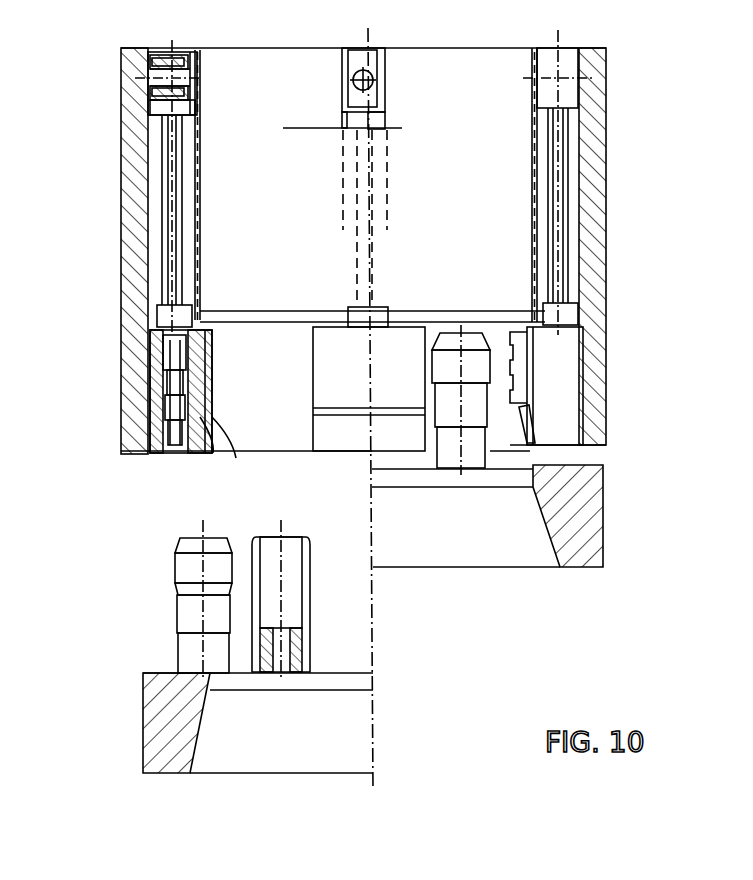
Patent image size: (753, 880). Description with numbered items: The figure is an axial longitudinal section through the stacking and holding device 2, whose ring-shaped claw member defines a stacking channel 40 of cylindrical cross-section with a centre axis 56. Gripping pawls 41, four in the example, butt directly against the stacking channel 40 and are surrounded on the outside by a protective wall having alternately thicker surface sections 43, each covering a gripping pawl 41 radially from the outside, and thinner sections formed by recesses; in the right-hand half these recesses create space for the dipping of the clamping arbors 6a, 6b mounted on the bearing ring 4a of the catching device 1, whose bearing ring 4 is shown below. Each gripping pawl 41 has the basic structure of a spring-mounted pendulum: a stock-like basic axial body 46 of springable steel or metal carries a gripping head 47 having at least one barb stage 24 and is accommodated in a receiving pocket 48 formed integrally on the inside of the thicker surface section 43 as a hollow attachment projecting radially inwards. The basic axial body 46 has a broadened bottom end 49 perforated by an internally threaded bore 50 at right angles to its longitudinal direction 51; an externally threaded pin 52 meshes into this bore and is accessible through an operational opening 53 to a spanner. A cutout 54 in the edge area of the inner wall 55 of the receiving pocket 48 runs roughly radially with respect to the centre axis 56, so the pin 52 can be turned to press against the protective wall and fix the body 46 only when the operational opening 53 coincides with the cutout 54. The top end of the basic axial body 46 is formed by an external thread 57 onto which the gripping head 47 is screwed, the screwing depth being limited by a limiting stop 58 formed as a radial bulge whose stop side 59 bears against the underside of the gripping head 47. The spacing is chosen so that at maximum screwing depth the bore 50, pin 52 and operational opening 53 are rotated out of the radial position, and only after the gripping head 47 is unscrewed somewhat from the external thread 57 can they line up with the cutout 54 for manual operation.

The catching device 1 is at (140, 553).
The stacking and holding device 2 is at (100, 136).
The bearing ring 4 is at (150, 718).
The bearing ring 4a is at (587, 508).
The clamping arbor 6a is at (190, 612).
The clamping arbor 6b is at (308, 572).
The barb stage 24 is at (210, 413).
The stacking channel 40 is at (445, 170).
The gripping pawl 41 is at (183, 208).
The thicker surface section 43 is at (598, 184).
The basic axial body 46 is at (583, 221).
The gripping head 47 is at (160, 398).
The receiving pocket 48 is at (184, 140).
The bottom end 49 is at (385, 58).
The internally threaded bore 50 is at (156, 50).
The longitudinal direction 51 is at (168, 50).
The externally threaded pin 52 is at (160, 87).
The operational opening 53 is at (374, 80).
The cutout 54 is at (200, 84).
The inner wall 55 is at (200, 181).
The centre axis 56 is at (375, 618).
The external thread 57 is at (222, 438).
The limiting stop 58 is at (157, 318).
The stop side 59 is at (163, 352).